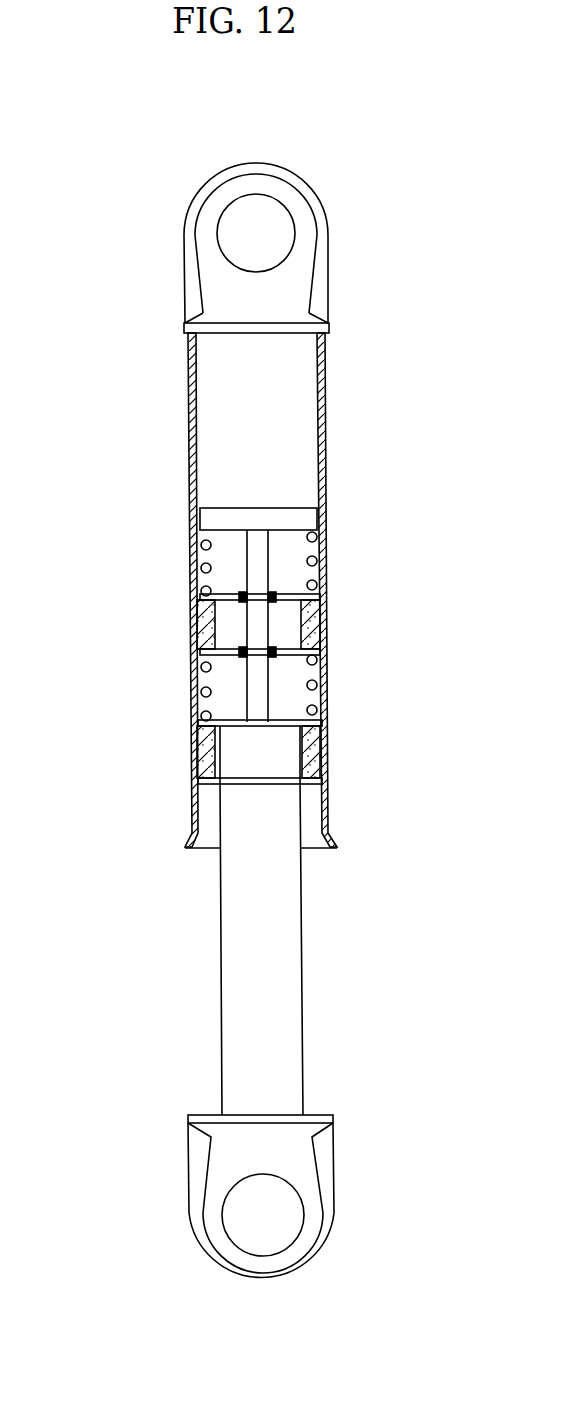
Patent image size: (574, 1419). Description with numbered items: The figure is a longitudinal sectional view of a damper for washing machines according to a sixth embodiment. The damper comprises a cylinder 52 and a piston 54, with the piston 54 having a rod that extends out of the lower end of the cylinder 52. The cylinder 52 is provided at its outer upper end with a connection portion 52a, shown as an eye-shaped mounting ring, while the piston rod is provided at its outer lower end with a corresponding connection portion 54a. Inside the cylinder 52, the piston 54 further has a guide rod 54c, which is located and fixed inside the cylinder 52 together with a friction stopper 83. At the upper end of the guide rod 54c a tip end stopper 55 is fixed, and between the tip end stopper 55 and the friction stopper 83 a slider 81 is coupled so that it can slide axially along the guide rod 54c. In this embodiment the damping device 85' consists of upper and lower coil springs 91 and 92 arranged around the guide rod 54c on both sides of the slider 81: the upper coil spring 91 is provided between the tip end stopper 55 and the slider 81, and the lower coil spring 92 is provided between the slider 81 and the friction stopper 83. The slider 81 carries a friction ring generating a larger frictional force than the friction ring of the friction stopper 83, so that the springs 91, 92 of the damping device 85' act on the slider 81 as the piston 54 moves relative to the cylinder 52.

The cylinder 52 is at (325, 425).
The connection portion 52a is at (207, 215).
The tip end stopper 55 is at (305, 515).
The damping device 85' is at (189, 626).
The upper coil spring 91 is at (204, 544).
The lower coil spring 92 is at (203, 715).
The slider 81 is at (290, 623).
The friction stopper 83 is at (290, 750).
The piston 54 is at (303, 976).
The guide rod 54c is at (257, 747).
The connection portion 54a is at (303, 1250).